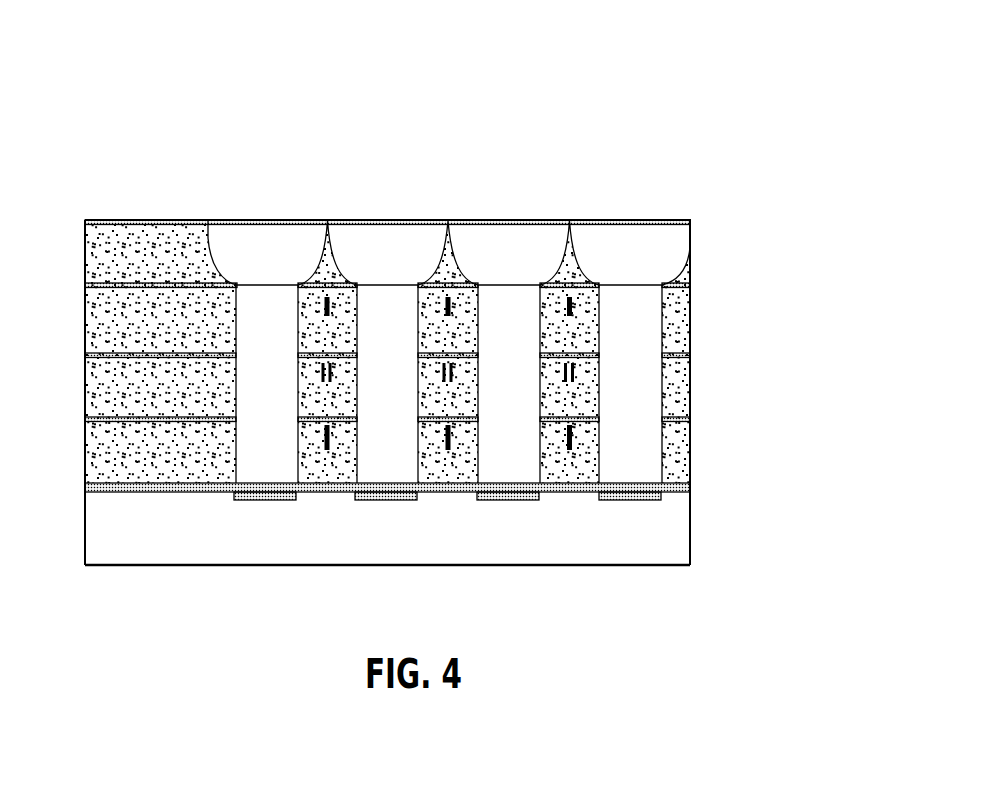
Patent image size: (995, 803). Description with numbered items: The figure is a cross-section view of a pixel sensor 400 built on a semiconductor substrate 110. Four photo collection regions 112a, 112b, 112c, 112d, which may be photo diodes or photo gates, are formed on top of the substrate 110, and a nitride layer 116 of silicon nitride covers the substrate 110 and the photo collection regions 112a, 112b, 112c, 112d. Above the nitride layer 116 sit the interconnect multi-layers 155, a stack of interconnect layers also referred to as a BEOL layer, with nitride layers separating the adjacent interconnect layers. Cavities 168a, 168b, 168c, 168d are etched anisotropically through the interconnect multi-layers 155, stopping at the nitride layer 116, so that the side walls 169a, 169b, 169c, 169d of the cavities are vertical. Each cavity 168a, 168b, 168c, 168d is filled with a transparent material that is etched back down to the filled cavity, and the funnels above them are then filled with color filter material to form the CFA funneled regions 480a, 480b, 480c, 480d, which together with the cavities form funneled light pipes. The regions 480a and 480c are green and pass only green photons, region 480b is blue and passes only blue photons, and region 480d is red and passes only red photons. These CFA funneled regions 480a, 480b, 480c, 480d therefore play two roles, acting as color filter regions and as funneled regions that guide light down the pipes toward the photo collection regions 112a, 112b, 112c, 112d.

The pixel sensor 400 is at (686, 94).
The semiconductor substrate 110 is at (100, 533).
The nitride layer 116 is at (690, 493).
The interconnect multi-layers 155 is at (713, 225).
The green CFA funneled region 480a is at (278, 258).
The blue CFA funneled region 480b is at (382, 258).
The green CFA funneled region 480c is at (522, 257).
The red CFA funneled region 480d is at (635, 263).
The cavity 168a is at (291, 400).
The cavity 168b is at (411, 400).
The cavity 168c is at (533, 400).
The cavity 168d is at (653, 400).
The side wall 169a is at (237, 457).
The side wall 169b is at (418, 447).
The side wall 169c is at (478, 440).
The side wall 169d is at (599, 440).
The photo collection region 112a is at (277, 500).
The photo collection region 112b is at (383, 500).
The photo collection region 112c is at (513, 500).
The photo collection region 112d is at (637, 500).